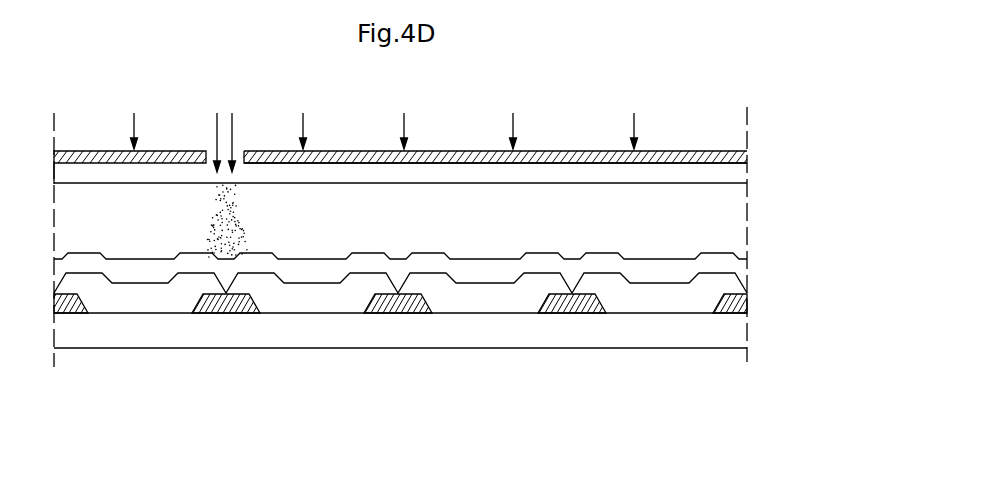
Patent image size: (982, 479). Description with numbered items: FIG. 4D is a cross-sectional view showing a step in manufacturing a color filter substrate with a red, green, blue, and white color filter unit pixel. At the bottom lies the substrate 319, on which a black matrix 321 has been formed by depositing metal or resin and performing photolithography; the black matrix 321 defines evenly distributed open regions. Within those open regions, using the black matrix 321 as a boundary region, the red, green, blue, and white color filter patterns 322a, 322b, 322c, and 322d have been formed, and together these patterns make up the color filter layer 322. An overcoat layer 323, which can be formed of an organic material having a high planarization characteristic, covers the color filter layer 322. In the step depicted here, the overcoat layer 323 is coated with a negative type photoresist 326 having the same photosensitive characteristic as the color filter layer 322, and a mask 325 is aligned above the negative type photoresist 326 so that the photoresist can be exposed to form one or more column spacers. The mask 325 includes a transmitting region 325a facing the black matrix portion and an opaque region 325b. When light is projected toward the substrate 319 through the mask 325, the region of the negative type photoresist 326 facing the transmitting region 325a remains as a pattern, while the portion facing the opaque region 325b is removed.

The substrate 319 is at (742, 337).
The black matrix 321 is at (70, 315).
The color filter layer 322 is at (623, 398).
The red color filter pattern 322a is at (185, 305).
The green color filter pattern 322b is at (344, 304).
The blue color filter pattern 322c is at (447, 300).
The white color filter pattern 322d is at (628, 300).
The overcoat layer 323 is at (740, 270).
The mask 325 is at (747, 157).
The transmitting region 325a is at (240, 143).
The opaque region 325b is at (380, 169).
The negative type photoresist 326 is at (738, 217).